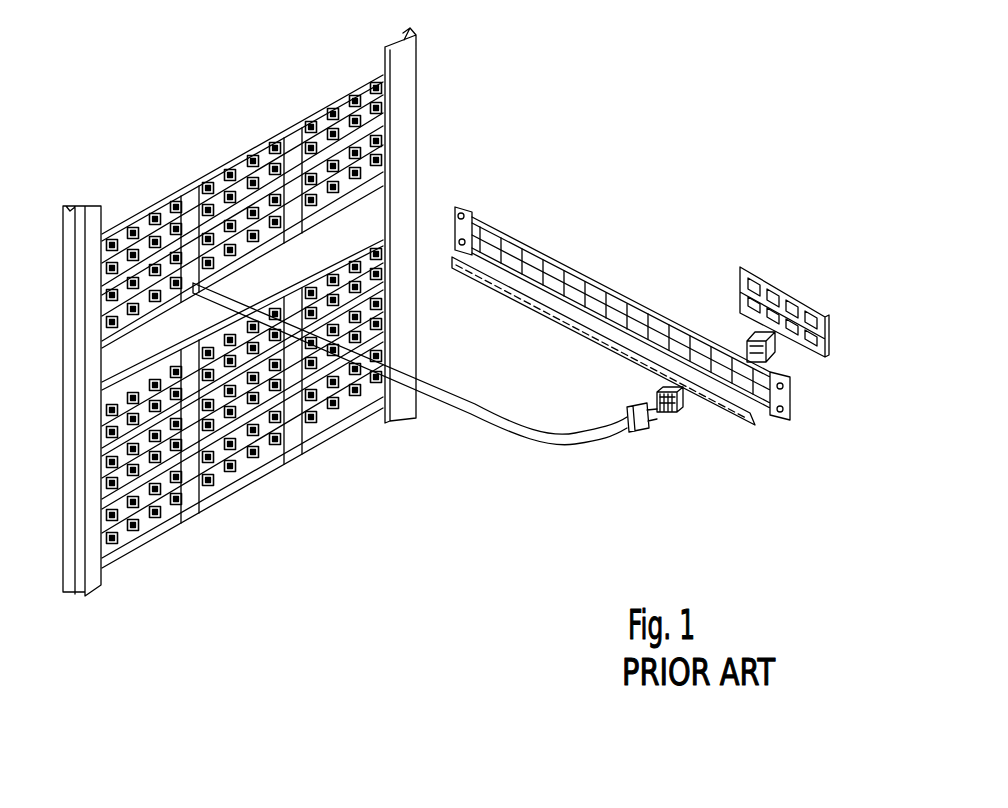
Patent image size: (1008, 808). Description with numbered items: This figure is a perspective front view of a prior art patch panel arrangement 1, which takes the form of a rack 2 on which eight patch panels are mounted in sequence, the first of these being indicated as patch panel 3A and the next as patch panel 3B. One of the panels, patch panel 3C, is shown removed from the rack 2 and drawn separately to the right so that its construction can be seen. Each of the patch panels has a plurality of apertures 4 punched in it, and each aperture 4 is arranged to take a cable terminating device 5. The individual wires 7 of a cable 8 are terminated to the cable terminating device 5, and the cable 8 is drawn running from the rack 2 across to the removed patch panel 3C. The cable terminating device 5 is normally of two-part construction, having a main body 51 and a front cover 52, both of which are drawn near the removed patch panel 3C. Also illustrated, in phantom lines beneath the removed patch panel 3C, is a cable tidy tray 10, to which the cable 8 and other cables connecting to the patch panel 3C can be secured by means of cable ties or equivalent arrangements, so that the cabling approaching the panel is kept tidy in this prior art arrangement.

The patch panel arrangement 1 is at (241, 76).
The rack 2 is at (88, 230).
The patch panel 3A is at (295, 140).
The patch panel 3B is at (143, 306).
The patch panel 3C is at (520, 237).
The aperture 4 is at (590, 290).
The cable terminating device 5 is at (636, 382).
The wires 7 is at (670, 410).
The cable 8 is at (473, 415).
The cable tidy tray 10 is at (508, 293).
The main body 51 is at (680, 405).
The front cover 52 is at (777, 353).